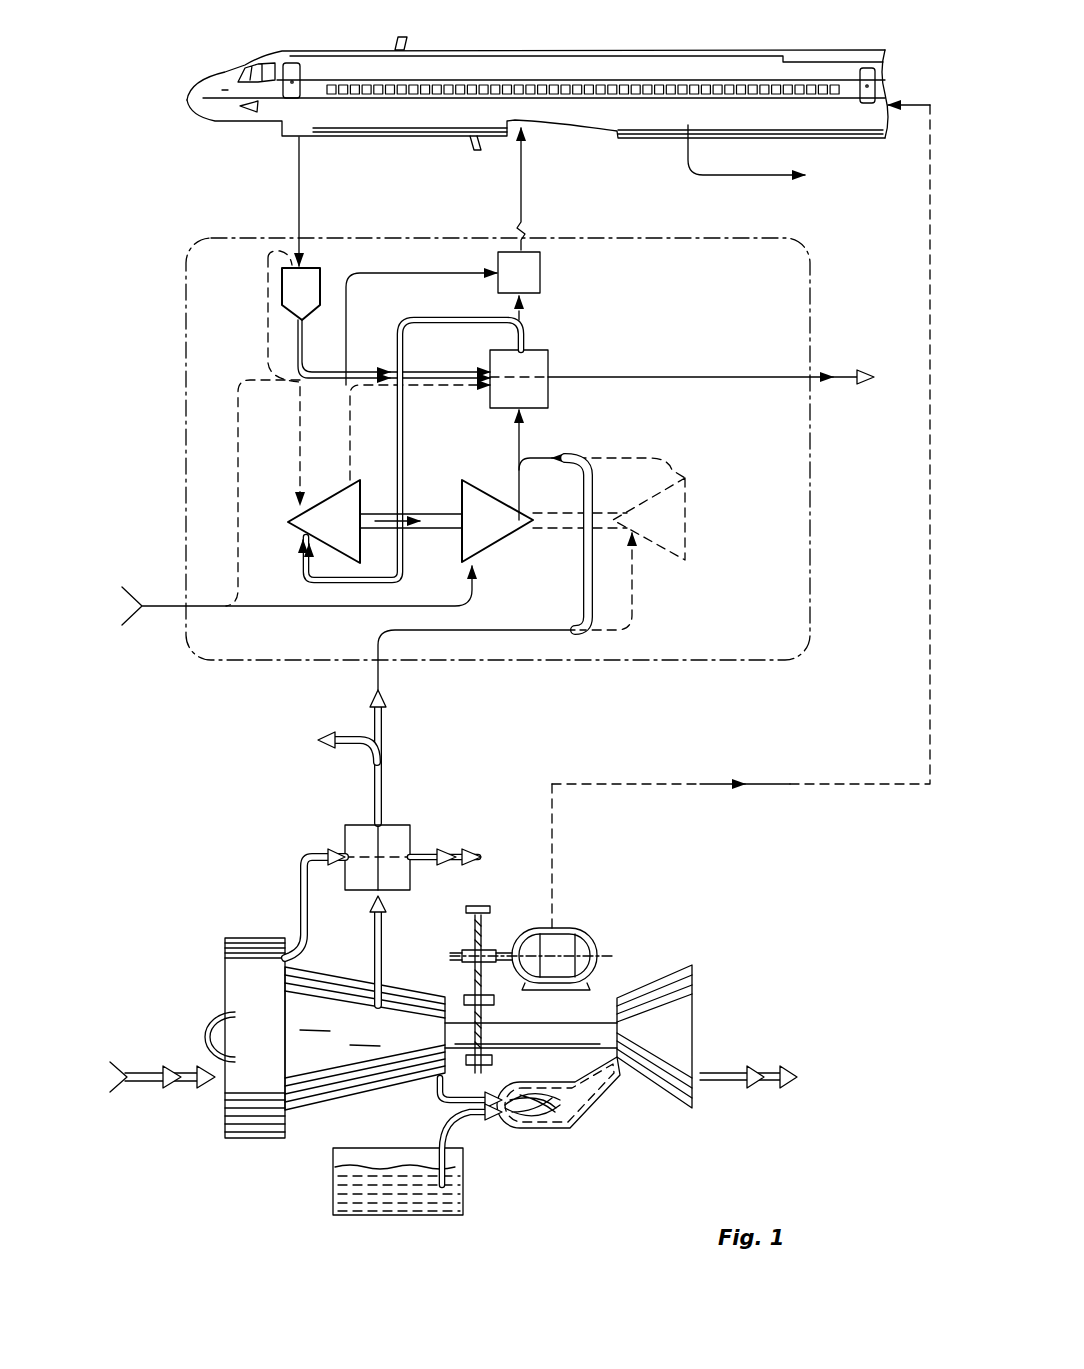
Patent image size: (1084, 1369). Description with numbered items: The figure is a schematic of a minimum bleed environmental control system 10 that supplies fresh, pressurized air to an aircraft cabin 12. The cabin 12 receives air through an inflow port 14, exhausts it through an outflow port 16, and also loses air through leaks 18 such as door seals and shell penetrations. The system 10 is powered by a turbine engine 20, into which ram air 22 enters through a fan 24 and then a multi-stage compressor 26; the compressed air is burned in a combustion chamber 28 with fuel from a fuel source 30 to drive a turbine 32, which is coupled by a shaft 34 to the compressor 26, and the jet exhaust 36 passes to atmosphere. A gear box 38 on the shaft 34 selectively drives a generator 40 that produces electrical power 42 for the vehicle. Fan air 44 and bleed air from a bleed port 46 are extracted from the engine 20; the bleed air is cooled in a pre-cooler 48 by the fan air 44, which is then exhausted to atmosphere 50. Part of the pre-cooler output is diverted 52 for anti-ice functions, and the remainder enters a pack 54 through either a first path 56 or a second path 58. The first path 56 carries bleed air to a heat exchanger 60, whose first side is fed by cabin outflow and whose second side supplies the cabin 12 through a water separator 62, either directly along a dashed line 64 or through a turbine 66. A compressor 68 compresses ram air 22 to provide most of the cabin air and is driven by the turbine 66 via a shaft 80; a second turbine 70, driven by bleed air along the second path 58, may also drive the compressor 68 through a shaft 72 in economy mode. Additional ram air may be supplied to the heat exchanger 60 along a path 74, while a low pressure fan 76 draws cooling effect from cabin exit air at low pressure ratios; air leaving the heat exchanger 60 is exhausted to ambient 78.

The environmental control system 10 is at (160, 322).
The cabin 12 is at (420, 50).
The inflow port 14 is at (548, 134).
The outflow port 16 is at (290, 150).
The leaks 18 is at (742, 188).
The turbine engine 20 is at (190, 930).
The ram air 22 is at (172, 604).
The fan 24 is at (247, 1143).
The multi-stage compressor 26 is at (310, 1113).
The combustion chamber 28 is at (587, 1113).
The fuel source 30 is at (467, 1187).
The turbine 32 is at (647, 980).
The shaft 34 is at (540, 1026).
The jet exhaust 36 is at (720, 1073).
The gear box 38 is at (495, 923).
The generator 40 is at (568, 928).
The electrical power 42 is at (855, 783).
The fan air 44 is at (301, 888).
The bleed port 46 is at (373, 998).
The pre-cooler 48 is at (398, 825).
The exhaust to atmosphere 50 is at (432, 853).
The diverted air 52 is at (352, 757).
The pack 54 is at (697, 660).
The first path 56 is at (580, 601).
The second path 58 is at (655, 598).
The heat exchanger 60 is at (493, 410).
The water separator 62 is at (541, 273).
The dashed line 64 is at (537, 330).
The turbine 66 is at (343, 480).
The compressor 68 is at (495, 490).
The second turbine 70 is at (688, 537).
The shaft 72 is at (570, 530).
The path 74 is at (235, 493).
The low pressure fan 76 is at (292, 262).
The exhaust to ambient 78 is at (845, 396).
The shaft 80 is at (431, 512).